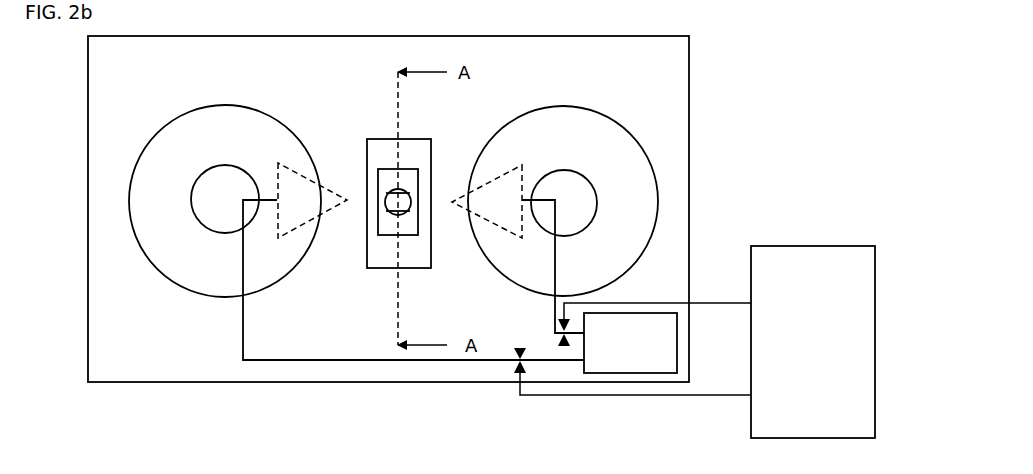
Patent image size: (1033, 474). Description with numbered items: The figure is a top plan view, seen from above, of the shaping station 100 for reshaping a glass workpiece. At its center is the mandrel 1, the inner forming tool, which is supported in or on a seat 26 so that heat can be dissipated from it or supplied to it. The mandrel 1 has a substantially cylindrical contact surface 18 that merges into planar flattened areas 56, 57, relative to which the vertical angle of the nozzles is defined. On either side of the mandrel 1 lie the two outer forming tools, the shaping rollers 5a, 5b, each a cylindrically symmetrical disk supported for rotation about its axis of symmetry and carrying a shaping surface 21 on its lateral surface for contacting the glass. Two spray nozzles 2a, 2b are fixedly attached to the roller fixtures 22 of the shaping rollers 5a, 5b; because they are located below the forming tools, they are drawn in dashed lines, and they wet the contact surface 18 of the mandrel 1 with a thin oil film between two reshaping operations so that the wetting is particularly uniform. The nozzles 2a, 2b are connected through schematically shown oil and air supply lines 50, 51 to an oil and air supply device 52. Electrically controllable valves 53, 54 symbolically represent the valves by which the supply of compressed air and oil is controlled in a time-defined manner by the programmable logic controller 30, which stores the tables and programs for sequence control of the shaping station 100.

The shaping station 100 is at (703, 108).
The shaping roller 5a is at (147, 202).
The shaping roller 5b is at (633, 193).
The shaping surface 21 is at (392, 201).
The roller fixture 22 is at (215, 187).
The spray nozzle 2a is at (279, 163).
The spray nozzle 2b is at (510, 172).
The seat 26 is at (387, 255).
The flattened area 56 is at (397, 190).
The mandrel 1 is at (390, 210).
The contact surface 18 is at (404, 194).
The flattened area 57 is at (402, 208).
The oil and air supply line 50 is at (243, 340).
The oil and air supply line 51 is at (552, 312).
The oil and air supply device 52 is at (630, 343).
The electrically controllable valve 53 is at (520, 373).
The electrically controllable valve 54 is at (557, 338).
The programmable logic controller 30 is at (751, 431).